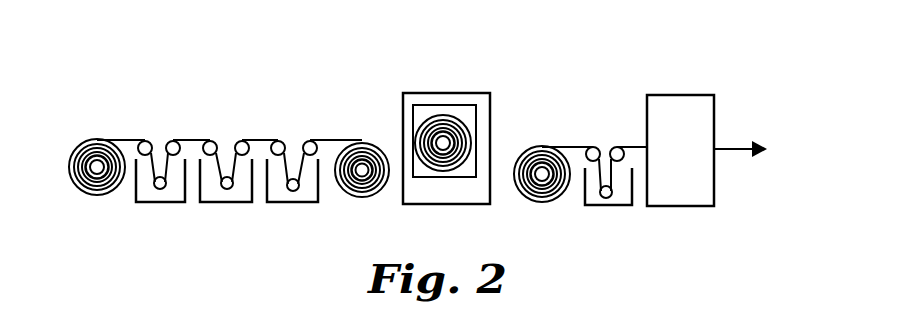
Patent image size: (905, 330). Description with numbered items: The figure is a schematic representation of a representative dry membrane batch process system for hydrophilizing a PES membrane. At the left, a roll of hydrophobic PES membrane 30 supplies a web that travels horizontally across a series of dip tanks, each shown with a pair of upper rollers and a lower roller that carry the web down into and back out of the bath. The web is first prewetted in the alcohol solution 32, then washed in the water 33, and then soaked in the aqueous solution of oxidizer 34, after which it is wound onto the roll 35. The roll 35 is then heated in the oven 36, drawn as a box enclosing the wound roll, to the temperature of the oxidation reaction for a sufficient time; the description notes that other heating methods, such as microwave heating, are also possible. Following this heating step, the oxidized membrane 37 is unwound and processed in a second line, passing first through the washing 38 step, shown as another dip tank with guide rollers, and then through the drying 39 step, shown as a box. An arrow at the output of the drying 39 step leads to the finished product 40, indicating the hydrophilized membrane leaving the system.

The hydrophobic PES membrane 30 is at (94, 139).
The alcohol solution 32 is at (161, 146).
The water 33 is at (225, 146).
The aqueous solution of oxidizer 34 is at (297, 147).
The roll 35 is at (370, 143).
The oven 36 is at (430, 92).
The oxidized membrane 37 is at (530, 146).
The washing step 38 is at (602, 147).
The drying step 39 is at (694, 157).
The output web 40 is at (733, 148).